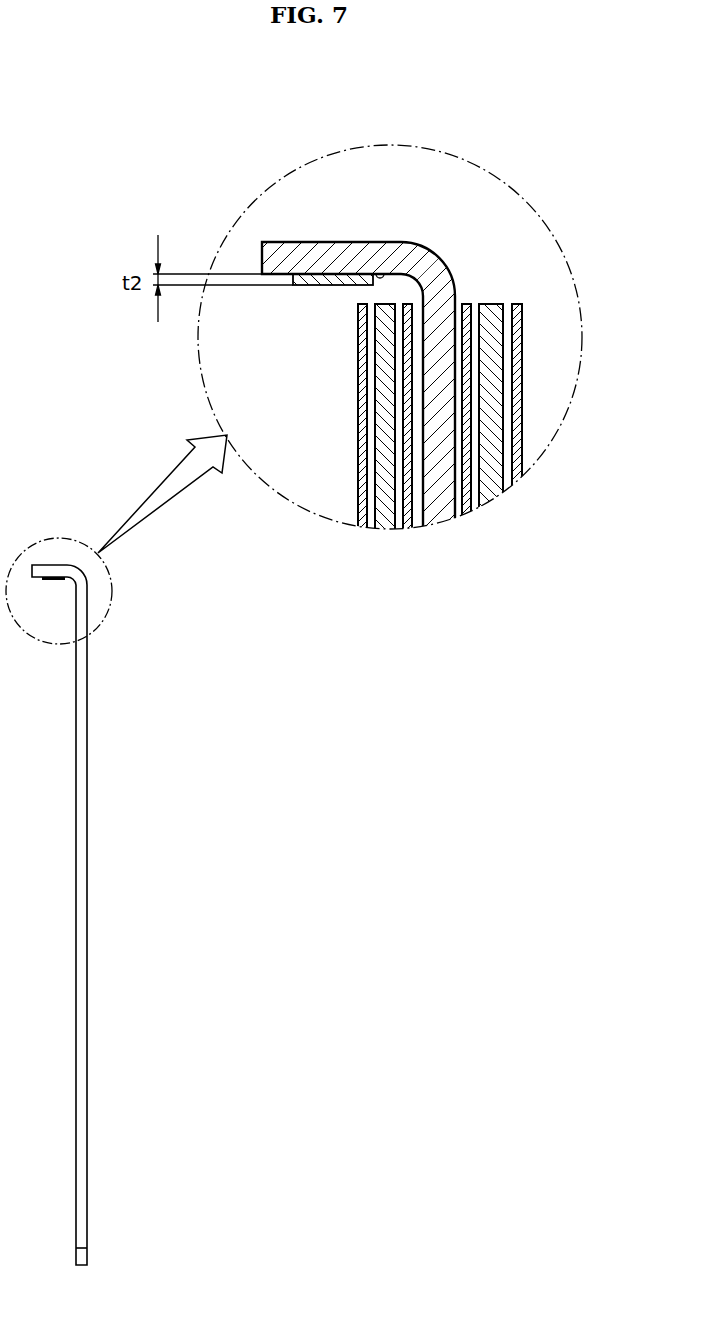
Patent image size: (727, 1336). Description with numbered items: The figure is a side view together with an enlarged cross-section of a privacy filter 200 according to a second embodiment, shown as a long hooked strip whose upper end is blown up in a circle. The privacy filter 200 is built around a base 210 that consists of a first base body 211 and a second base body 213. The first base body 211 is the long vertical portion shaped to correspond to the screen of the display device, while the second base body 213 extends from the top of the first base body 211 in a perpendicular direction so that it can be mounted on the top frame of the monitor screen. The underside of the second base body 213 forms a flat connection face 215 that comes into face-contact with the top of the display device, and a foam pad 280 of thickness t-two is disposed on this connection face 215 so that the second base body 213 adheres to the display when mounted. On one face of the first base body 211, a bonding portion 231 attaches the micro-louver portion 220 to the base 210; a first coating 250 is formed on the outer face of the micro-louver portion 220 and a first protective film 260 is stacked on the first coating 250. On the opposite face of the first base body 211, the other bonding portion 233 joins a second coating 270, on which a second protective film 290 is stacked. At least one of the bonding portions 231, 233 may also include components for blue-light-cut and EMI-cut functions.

The privacy filter 200 is at (112, 927).
The base 210 is at (410, 303).
The first base body 211 is at (437, 340).
The second base body 213 is at (398, 257).
The connection face 215 is at (379, 276).
The micro-louver portion 220 is at (546, 430).
The first coating 250 is at (483, 490).
The bonding portion 231 is at (467, 490).
The bonding portion 233 is at (413, 507).
The first protective film 260 is at (517, 468).
The second coating 270 is at (388, 510).
The foam pad 280 is at (321, 285).
The second protective film 290 is at (357, 490).